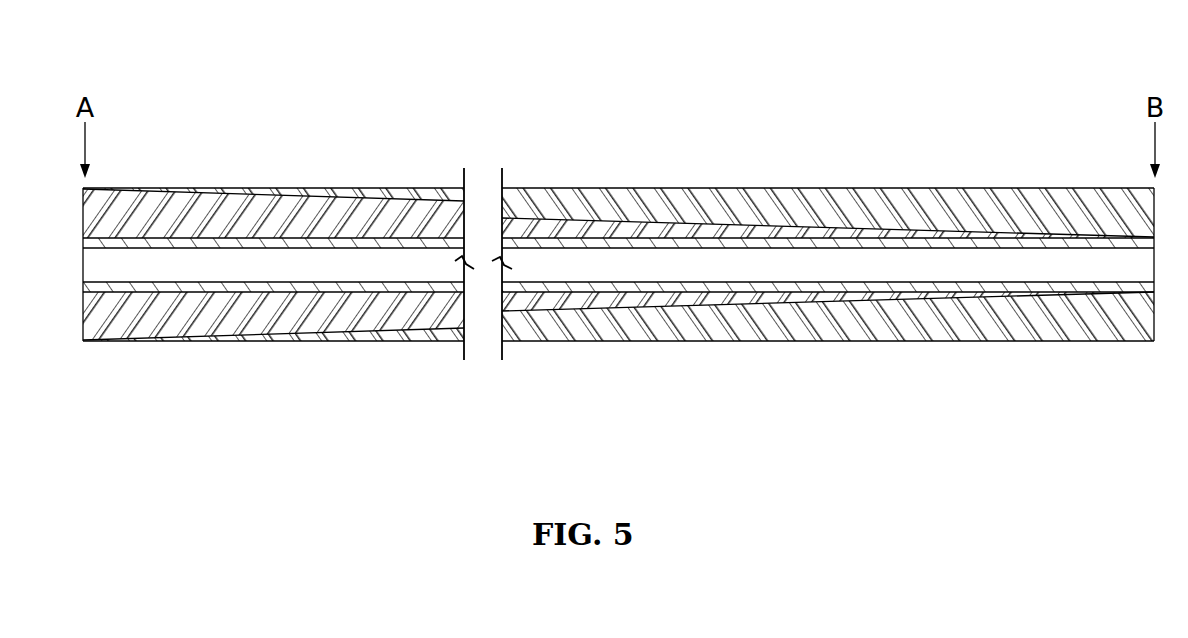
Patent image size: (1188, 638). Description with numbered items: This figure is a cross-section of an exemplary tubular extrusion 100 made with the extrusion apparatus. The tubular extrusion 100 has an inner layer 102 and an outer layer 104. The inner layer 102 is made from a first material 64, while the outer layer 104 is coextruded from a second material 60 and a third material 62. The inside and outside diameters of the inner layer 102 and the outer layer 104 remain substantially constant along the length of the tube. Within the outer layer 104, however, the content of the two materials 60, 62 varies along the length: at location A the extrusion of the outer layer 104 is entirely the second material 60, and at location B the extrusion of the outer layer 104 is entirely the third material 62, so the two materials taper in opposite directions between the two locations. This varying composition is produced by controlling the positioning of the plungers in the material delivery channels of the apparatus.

The tubular extrusion 100 is at (770, 108).
The third material 62 is at (818, 210).
The second material 60 is at (242, 315).
The first material 64 is at (773, 288).
The inner layer 102 is at (663, 285).
The outer layer 104 is at (595, 205).